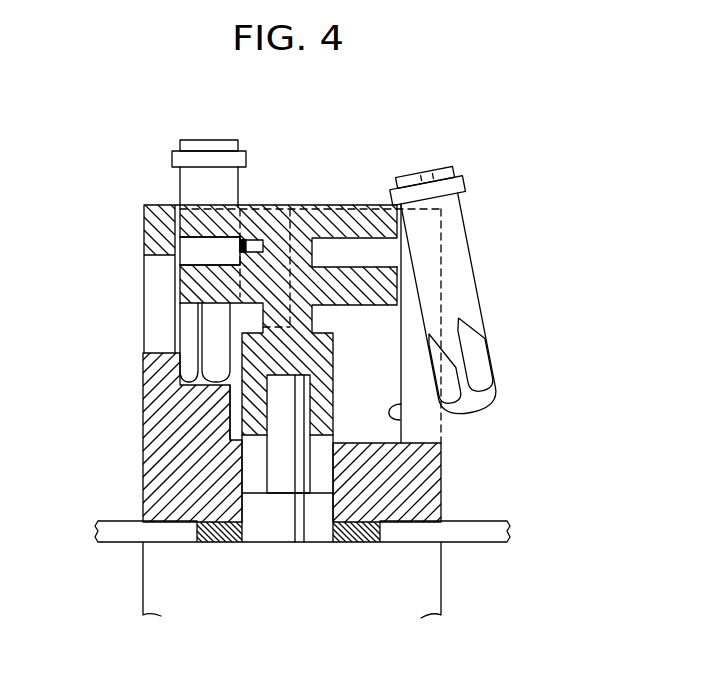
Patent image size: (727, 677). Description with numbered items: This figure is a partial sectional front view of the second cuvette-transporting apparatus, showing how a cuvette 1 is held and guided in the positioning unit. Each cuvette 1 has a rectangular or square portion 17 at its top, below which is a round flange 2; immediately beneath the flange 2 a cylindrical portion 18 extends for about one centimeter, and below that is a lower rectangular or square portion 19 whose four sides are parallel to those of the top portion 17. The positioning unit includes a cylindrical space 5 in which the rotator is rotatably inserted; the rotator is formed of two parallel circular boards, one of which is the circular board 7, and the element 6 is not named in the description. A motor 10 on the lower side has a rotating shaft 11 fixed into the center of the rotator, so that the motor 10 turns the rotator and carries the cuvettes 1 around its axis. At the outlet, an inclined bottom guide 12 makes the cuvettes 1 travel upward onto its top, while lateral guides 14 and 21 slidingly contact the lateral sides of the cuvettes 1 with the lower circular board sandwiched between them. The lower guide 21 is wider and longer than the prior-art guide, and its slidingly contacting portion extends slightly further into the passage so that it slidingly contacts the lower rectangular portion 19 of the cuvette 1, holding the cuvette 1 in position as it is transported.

The cuvette 1 is at (173, 182).
The round flange 2 is at (173, 161).
The cylindrical space 5 is at (400, 420).
The holder body 6 is at (357, 296).
The circular board 7 is at (365, 212).
The motor 10 is at (427, 582).
The rotating shaft 11 is at (297, 463).
The bottom guide 12 is at (190, 420).
The lateral guide 14 is at (243, 248).
The rectangular or square portion 17 is at (181, 146).
The cylindrical portion 18 is at (190, 256).
The lower rectangular or square portion 19 is at (183, 347).
The lower guide 21 is at (280, 257).